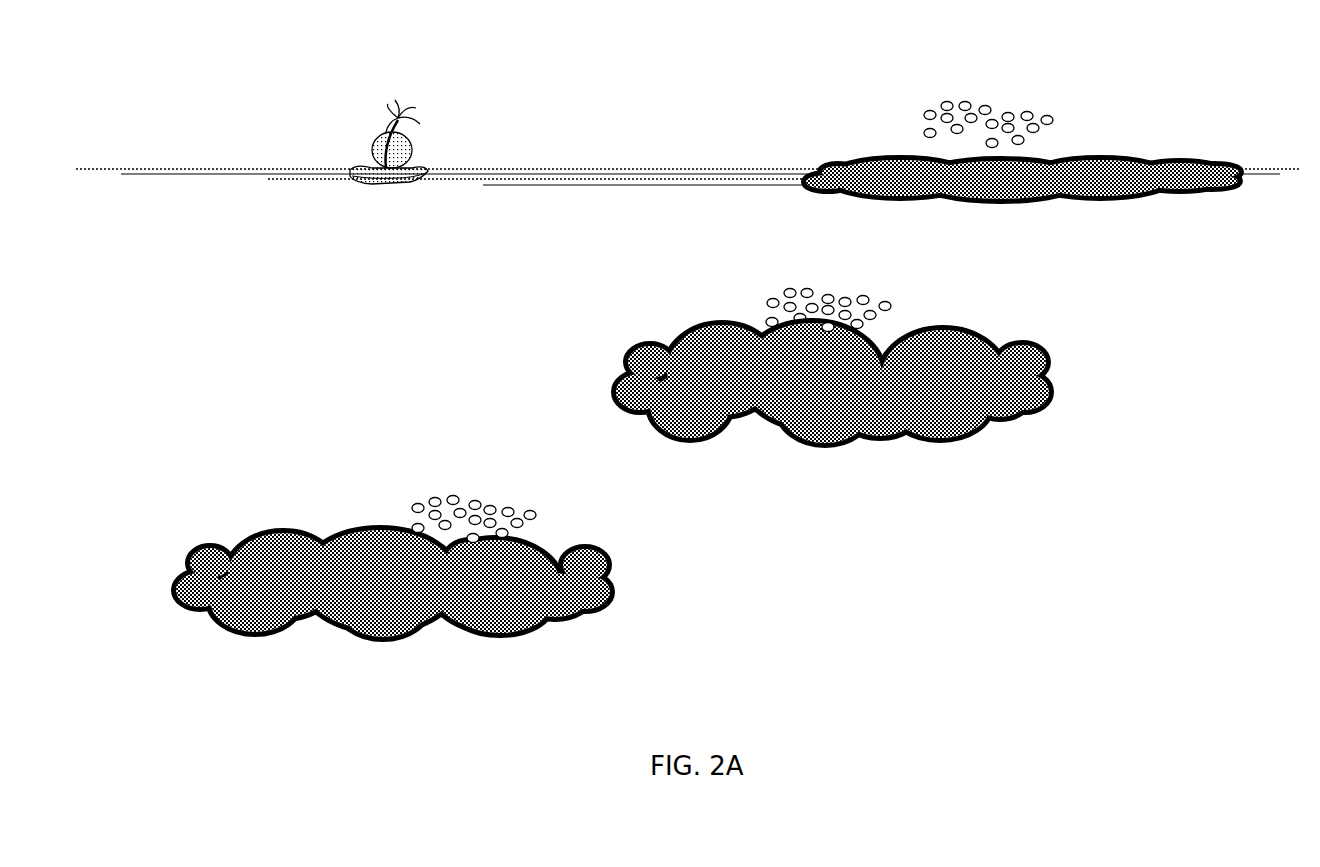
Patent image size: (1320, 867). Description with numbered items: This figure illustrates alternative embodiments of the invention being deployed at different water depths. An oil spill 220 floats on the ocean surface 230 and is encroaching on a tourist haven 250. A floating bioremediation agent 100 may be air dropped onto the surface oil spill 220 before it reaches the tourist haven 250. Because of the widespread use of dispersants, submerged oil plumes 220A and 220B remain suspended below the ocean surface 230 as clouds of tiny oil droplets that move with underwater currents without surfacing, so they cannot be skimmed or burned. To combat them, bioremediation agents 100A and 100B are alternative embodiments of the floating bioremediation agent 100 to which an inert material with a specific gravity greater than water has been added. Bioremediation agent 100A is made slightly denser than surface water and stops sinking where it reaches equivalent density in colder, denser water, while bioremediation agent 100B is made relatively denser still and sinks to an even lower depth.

The bioremediation agent 100 is at (947, 98).
The bioremediation agent 100A is at (845, 297).
The bioremediation agent 100B is at (437, 497).
The oil spill 220 is at (1080, 200).
The submerged oil plume 220A is at (907, 437).
The submerged oil plume 220B is at (437, 633).
The ocean surface 230 is at (578, 168).
The tourist haven 250 is at (388, 132).